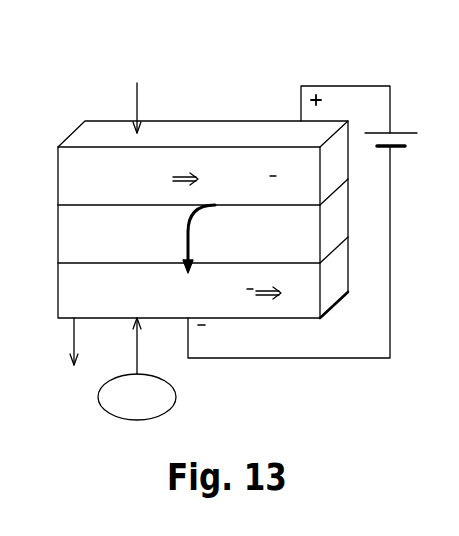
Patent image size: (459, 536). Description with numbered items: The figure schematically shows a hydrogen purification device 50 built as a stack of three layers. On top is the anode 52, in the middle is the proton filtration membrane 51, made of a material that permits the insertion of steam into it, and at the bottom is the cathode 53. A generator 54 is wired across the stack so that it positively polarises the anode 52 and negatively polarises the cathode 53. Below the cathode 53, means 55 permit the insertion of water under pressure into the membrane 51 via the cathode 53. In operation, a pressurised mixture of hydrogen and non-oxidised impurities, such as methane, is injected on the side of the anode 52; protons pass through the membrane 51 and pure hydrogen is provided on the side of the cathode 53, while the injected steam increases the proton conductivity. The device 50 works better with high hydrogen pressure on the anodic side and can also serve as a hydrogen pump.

The hydrogen purification device 50 is at (52, 129).
The proton filtration membrane 51 is at (90, 249).
The anode 52 is at (90, 191).
The cathode 53 is at (90, 304).
The generator 54 is at (405, 122).
The means permitting the insertion under pressure of water 55 is at (175, 417).